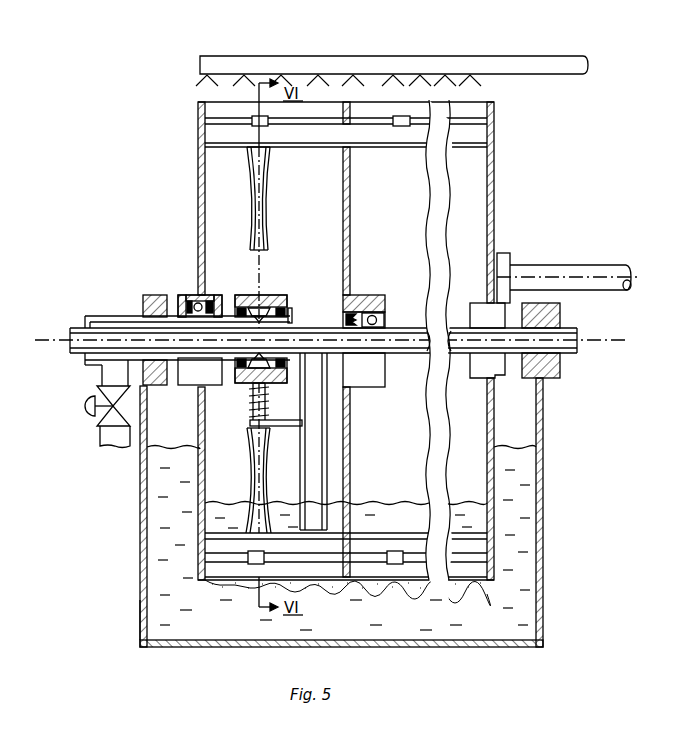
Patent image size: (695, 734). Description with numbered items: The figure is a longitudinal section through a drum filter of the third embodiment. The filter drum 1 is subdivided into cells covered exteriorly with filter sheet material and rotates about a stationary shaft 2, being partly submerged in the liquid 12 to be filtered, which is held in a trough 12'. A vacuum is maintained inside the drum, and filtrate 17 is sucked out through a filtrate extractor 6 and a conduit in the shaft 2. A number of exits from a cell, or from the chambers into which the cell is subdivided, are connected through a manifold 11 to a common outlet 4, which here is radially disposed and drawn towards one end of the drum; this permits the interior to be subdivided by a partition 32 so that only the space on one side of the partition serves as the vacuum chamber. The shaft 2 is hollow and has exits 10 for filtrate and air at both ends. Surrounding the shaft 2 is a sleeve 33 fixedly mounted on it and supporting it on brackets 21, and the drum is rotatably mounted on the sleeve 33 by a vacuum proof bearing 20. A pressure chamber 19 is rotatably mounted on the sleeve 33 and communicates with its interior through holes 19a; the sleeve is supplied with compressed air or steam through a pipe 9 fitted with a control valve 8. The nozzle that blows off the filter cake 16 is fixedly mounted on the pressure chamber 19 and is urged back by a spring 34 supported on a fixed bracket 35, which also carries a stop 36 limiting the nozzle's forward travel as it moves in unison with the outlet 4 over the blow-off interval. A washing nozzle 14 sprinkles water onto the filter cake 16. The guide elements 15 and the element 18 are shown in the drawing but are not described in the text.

The filter drum 1 is at (193, 101).
The shaft 2 is at (396, 328).
The outlet 4 is at (267, 240).
The filtrate extractor 6 is at (322, 486).
The control valve 8 is at (78, 406).
The pipe 9 is at (117, 447).
The exits 10 is at (70, 348).
The manifold 11 is at (302, 146).
The liquid 12 is at (341, 512).
The trough 12' is at (119, 619).
The washing nozzle 14 is at (231, 82).
The guide rails 15 is at (311, 108).
The filter cake 16 is at (245, 584).
The filtrate 17 is at (404, 529).
The supply pipe 18 is at (522, 270).
The pressure chamber 19 is at (288, 302).
The holes 19a is at (262, 296).
The vacuum proof bearing 20 is at (190, 294).
The brackets 21 is at (151, 294).
The partition 32 is at (350, 208).
The sleeve 33 is at (113, 316).
The spring 34 is at (250, 404).
The fixed bracket 35 is at (296, 426).
The stop 36 is at (268, 399).